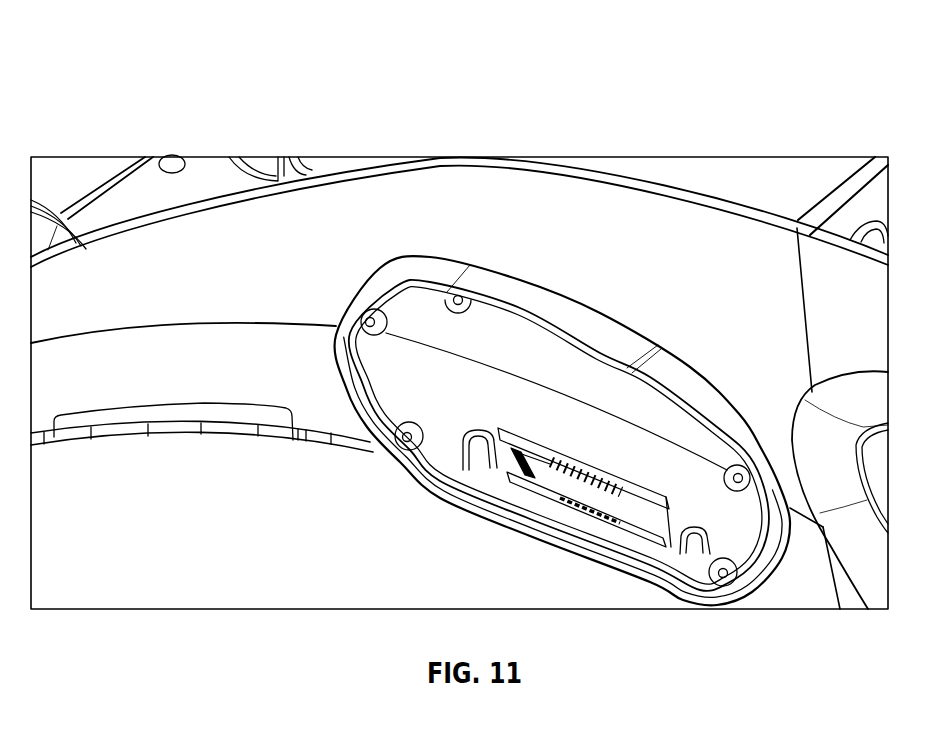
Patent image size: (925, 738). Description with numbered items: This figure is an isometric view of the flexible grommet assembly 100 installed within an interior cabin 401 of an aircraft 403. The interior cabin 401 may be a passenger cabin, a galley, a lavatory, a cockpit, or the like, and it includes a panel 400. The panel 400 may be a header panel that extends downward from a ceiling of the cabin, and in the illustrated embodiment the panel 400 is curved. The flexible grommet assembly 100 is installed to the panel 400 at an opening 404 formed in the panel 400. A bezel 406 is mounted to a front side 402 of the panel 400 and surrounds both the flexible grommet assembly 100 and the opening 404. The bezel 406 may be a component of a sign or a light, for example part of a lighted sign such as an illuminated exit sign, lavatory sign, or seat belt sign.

The flexible grommet assembly 100 is at (645, 478).
The panel 400 is at (615, 262).
The interior cabin 401 is at (114, 184).
The front side 402 is at (477, 238).
The aircraft 403 is at (705, 78).
The opening 404 is at (620, 508).
The bezel 406 is at (423, 282).